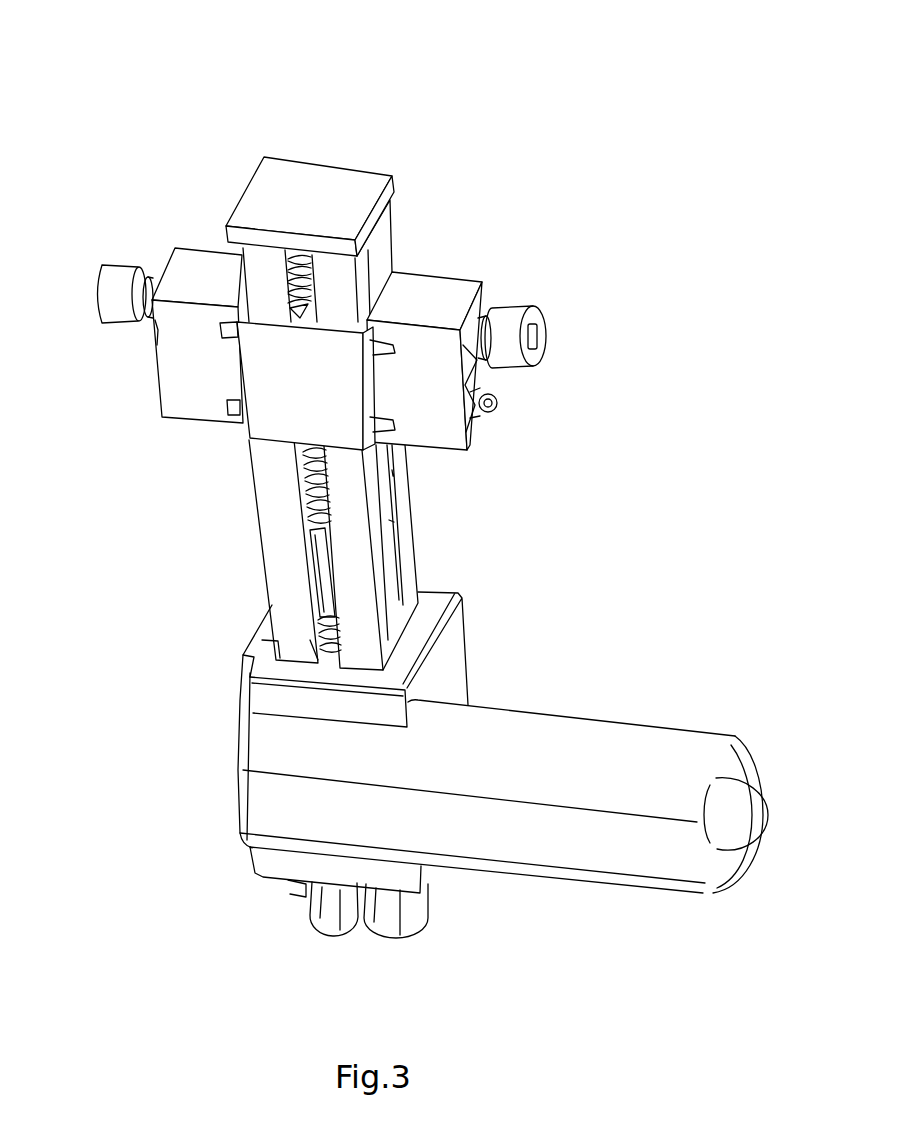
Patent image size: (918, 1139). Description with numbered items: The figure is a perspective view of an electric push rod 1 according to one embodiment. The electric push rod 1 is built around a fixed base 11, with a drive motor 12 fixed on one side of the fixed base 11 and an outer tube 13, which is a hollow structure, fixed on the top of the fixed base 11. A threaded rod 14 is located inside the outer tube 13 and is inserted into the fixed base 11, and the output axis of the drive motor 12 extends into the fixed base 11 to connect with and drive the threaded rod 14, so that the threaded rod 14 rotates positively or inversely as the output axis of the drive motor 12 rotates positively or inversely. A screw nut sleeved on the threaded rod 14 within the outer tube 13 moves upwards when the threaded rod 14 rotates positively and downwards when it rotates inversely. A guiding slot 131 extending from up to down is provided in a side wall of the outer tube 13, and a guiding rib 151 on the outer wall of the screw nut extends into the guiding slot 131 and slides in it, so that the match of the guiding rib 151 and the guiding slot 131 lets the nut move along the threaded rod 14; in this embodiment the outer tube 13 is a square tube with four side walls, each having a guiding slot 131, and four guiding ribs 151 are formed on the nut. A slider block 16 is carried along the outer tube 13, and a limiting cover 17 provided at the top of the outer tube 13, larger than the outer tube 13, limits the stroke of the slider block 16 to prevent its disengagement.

The electric push rod 1 is at (58, 47).
The fixed base 11 is at (455, 665).
The drive motor 12 is at (600, 738).
The outer tube 13 is at (278, 517).
The guiding slot 131 is at (306, 650).
The threaded rod 14 is at (303, 468).
The guiding rib 151 is at (392, 552).
The slider block 16 is at (427, 293).
The limiting cover 17 is at (320, 172).